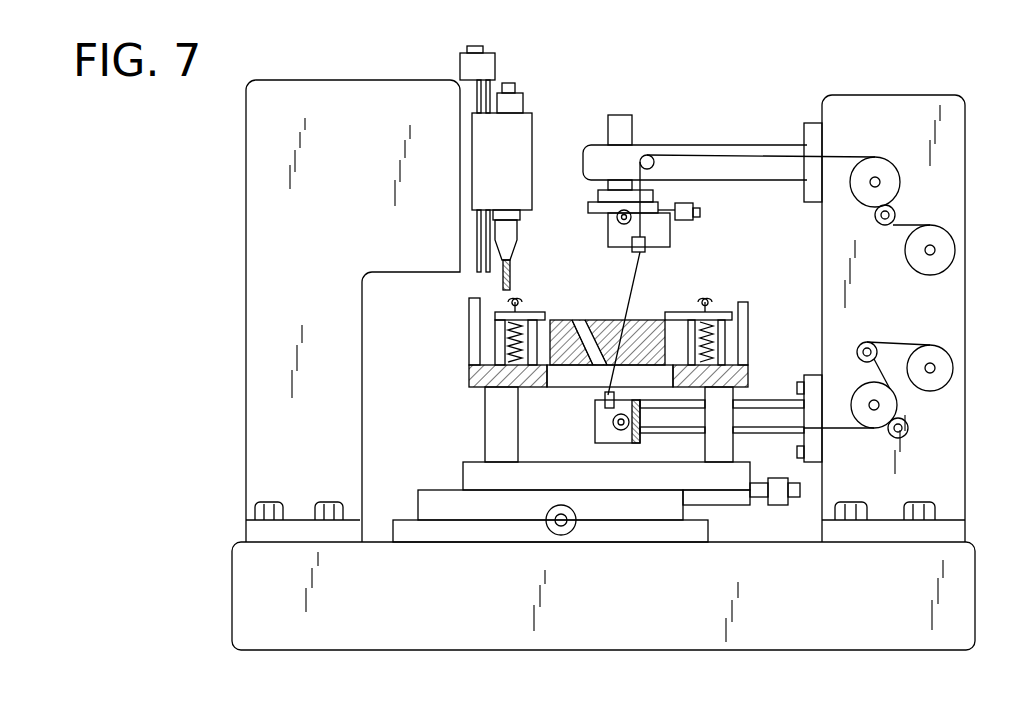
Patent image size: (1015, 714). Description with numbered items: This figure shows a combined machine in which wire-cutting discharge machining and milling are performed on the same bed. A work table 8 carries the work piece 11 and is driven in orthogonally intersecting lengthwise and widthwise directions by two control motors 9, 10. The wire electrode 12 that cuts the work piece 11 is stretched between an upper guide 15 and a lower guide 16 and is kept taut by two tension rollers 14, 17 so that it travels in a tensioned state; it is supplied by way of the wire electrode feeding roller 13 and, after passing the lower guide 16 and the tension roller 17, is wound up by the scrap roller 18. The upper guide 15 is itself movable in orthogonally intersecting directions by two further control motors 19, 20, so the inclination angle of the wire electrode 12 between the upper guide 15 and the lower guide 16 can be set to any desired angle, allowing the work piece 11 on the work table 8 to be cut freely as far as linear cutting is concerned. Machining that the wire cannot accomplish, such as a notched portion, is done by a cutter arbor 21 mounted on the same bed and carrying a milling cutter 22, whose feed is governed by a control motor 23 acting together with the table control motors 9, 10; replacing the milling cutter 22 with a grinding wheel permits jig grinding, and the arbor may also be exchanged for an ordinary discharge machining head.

The work table 8 is at (553, 388).
The control motor 9 is at (780, 507).
The control motor 10 is at (565, 542).
The work piece 11 is at (645, 318).
The wire electrode 12 is at (630, 283).
The wire electrode feeding roller 13 is at (952, 228).
The tension roller 14 is at (882, 160).
The upper guide 15 is at (645, 250).
The lower guide 16 is at (602, 398).
The tension roller 17 is at (875, 420).
The scrap roller 18 is at (944, 354).
The control motor 19 is at (693, 200).
The control motor 20 is at (617, 218).
The cutter arbor 21 is at (533, 133).
The milling cutter 22 is at (512, 268).
The control motor 23 is at (485, 63).